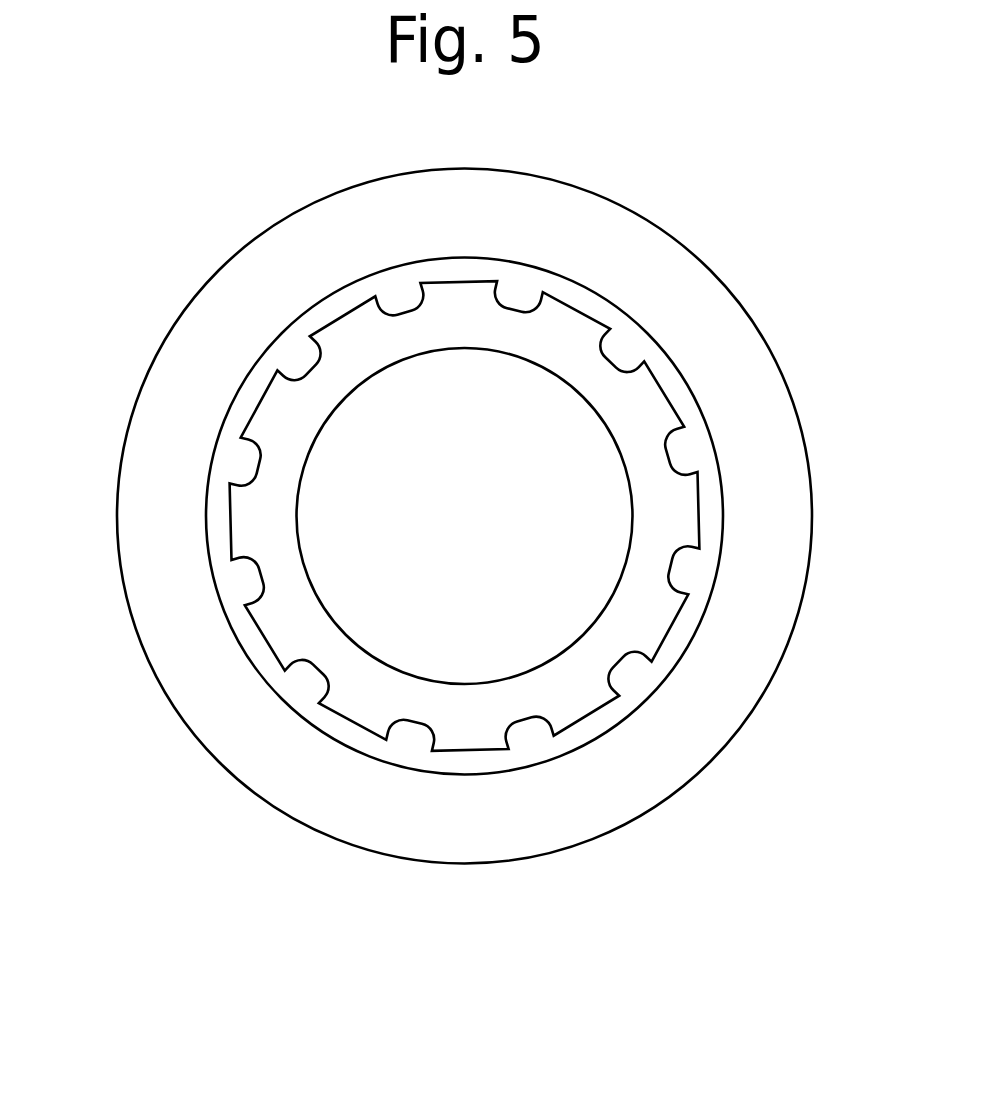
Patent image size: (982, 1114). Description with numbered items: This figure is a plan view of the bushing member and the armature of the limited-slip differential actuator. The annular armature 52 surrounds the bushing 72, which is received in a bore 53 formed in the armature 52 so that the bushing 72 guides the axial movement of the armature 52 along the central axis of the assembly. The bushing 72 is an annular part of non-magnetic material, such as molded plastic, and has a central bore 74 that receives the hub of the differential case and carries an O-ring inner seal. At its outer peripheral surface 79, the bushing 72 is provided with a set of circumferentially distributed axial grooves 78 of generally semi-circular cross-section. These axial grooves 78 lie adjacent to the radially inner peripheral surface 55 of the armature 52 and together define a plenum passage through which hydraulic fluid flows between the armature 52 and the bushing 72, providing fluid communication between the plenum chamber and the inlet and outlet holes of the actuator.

The armature 52 is at (683, 730).
The bore 53 is at (485, 527).
The radially inner peripheral surface 55 is at (380, 465).
The bushing 72 is at (465, 516).
The central bore 74 is at (300, 516).
The axial grooves 78 is at (400, 303).
The outer peripheral surface 79 is at (577, 303).